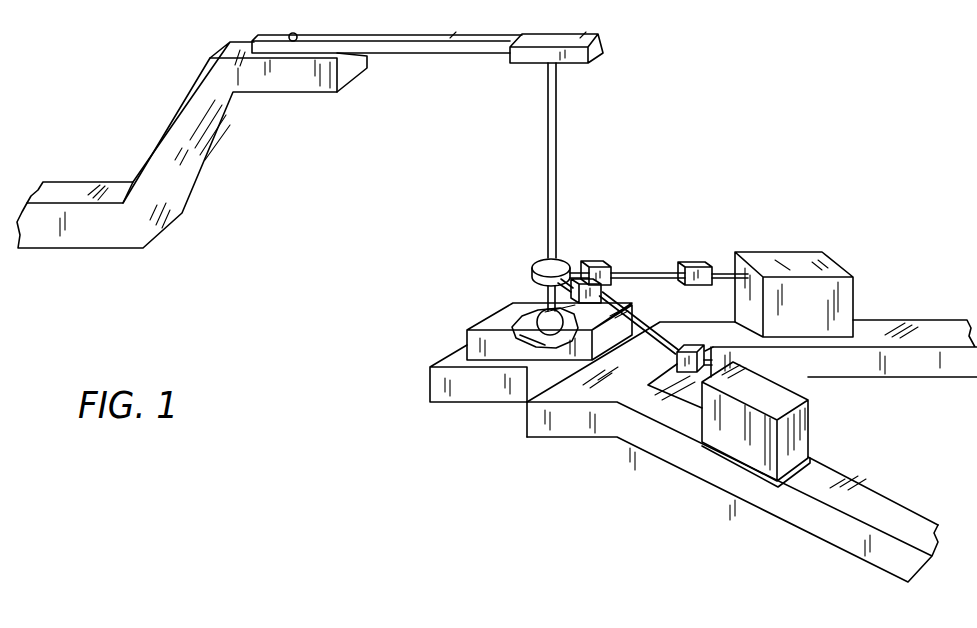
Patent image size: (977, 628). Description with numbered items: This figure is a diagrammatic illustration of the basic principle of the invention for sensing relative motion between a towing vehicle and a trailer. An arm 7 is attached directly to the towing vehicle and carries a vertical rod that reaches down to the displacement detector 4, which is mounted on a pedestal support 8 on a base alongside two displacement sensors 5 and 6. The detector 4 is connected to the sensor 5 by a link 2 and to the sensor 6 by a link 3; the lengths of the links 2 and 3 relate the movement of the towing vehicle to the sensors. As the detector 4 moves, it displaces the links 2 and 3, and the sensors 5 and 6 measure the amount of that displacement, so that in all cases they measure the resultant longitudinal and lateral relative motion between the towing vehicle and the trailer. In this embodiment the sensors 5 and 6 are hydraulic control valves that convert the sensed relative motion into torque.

The link 2 is at (652, 273).
The link 3 is at (634, 320).
The displacement detector 4 is at (558, 190).
The displacement sensor 5 is at (785, 257).
The displacement sensor 6 is at (805, 430).
The arm 7 is at (78, 187).
The ball joint support 8 is at (497, 322).